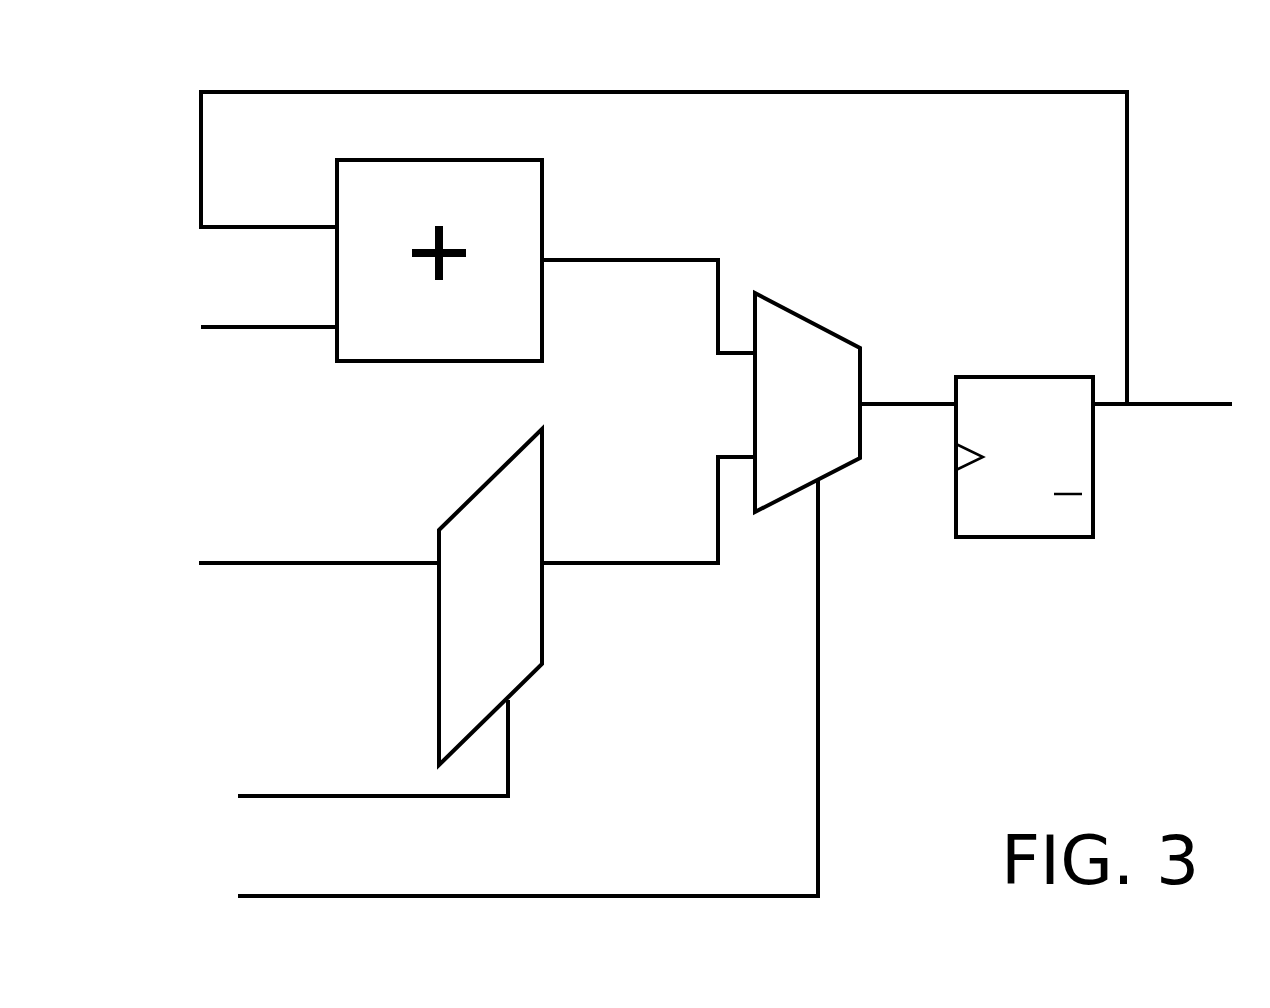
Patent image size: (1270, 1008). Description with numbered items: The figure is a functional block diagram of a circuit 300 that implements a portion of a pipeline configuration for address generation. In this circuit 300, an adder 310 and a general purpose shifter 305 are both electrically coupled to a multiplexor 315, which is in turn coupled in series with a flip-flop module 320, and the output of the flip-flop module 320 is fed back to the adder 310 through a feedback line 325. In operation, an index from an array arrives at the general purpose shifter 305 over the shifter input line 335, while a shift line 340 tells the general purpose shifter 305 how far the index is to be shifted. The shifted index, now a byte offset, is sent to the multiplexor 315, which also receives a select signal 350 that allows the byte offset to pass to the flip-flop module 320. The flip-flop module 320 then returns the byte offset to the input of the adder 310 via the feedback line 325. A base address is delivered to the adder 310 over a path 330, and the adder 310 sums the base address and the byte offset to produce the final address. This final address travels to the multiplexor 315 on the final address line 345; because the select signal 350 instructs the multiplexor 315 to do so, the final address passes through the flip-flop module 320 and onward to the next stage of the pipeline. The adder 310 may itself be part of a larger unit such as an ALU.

The circuit 300 is at (1043, 754).
The general purpose shifter 305 is at (545, 599).
The adder 310 is at (542, 192).
The multiplexor 315 is at (780, 303).
The flip-flop module 320 is at (970, 537).
The feedback line 325 is at (363, 95).
The path 330 is at (223, 327).
The shifter input line 335 is at (240, 563).
The shift line 340 is at (255, 796).
The final address line 345 is at (662, 258).
The select signal 350 is at (255, 896).